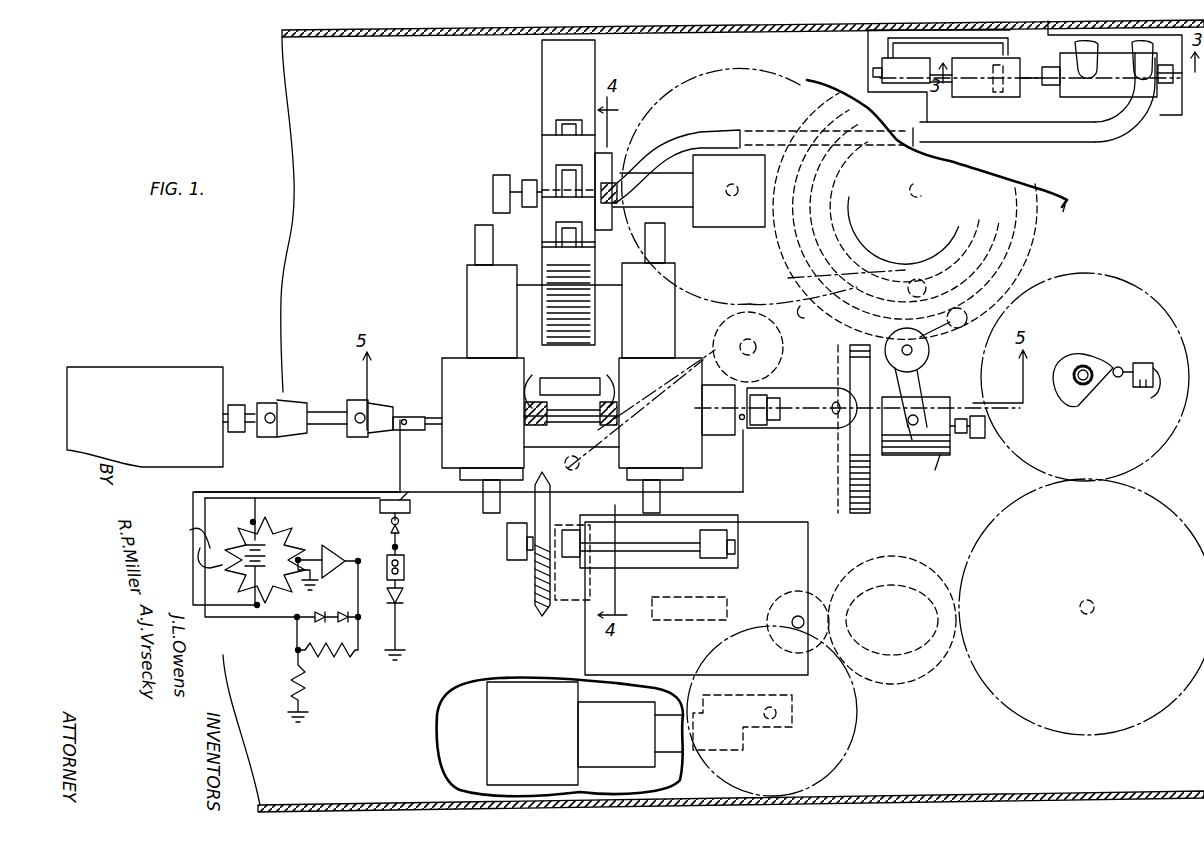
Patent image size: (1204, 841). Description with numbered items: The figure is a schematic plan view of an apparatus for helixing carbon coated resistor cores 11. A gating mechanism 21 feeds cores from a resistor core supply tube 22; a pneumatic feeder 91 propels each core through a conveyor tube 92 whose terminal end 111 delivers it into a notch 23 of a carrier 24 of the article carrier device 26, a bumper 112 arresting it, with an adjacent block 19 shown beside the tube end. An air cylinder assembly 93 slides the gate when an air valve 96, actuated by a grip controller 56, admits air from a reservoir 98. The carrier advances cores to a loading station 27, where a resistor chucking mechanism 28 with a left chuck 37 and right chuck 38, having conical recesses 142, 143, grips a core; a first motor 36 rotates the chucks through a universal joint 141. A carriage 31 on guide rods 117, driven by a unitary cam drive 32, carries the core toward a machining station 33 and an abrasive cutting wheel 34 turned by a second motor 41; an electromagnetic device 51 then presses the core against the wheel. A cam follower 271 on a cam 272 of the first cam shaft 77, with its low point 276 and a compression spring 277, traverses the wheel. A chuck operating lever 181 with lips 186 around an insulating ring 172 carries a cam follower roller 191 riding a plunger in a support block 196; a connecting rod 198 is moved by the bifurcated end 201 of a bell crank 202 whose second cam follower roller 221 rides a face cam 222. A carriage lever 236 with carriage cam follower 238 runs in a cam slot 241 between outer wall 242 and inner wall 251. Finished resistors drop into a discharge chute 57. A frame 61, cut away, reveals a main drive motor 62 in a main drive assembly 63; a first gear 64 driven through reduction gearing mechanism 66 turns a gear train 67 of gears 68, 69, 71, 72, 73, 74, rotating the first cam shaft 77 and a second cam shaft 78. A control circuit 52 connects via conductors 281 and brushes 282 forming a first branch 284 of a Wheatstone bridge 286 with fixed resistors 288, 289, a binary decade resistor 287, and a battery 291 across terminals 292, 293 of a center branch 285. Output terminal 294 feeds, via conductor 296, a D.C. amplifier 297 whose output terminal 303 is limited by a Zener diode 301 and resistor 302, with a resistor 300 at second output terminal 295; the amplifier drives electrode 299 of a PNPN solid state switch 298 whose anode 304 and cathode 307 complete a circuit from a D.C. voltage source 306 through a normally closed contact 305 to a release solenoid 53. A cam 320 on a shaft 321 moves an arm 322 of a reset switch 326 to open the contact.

The ceramic core 11 is at (568, 418).
The block 19 is at (680, 200).
The gating mechanism 21 is at (1069, 90).
The resistor core supply tube 22 is at (1075, 48).
The notches 23 is at (554, 138).
The carrier 24 is at (540, 97).
The article carrier device 26 is at (508, 166).
The loading station 27 is at (526, 333).
The resistor chucking mechanism 28 is at (645, 352).
The carriage 31 is at (468, 298).
The unitary cam drive 32 is at (831, 281).
The machining station 33 is at (509, 515).
The abrasive cutting wheel 34 is at (534, 600).
The first motor 36 is at (204, 366).
The left chuck 37 is at (537, 379).
The right chuck 38 is at (603, 379).
The second motor 41 is at (718, 558).
The electromagnetic device 51 is at (578, 530).
The control circuit 52 is at (177, 550).
The release solenoid 53 is at (406, 565).
The grip controller 56 is at (740, 455).
The discharge chute 57 is at (568, 378).
The frame 61 is at (280, 100).
The main drive motor 62 is at (495, 703).
The main drive assembly 63 is at (673, 693).
The first gear 64 is at (850, 755).
The reduction gearing mechanism 66 is at (640, 750).
The gear train 67 is at (969, 681).
The gear 68 is at (933, 675).
The gear 69 is at (1148, 500).
The gear 71 is at (1120, 285).
The gear 72 is at (1078, 212).
The gear 73 is at (860, 157).
The gear 74 is at (700, 80).
The first cam shaft 77 is at (890, 622).
The second cam shaft 78 is at (912, 198).
The pneumatic feeder 91 is at (1132, 58).
The conveyor tube 92 is at (690, 135).
The air cylinder assembly 93 is at (960, 85).
The air valve 96 is at (870, 69).
The reservoir 98 is at (870, 40).
The terminal end 111 is at (618, 180).
The bumper 112 is at (492, 195).
The guide rods 117 is at (476, 270).
The universal joint 141 is at (318, 388).
The first conical recess 142 is at (520, 412).
The second recess 143 is at (645, 405).
The insulating ring 172 is at (761, 387).
The chuck operating lever 181 is at (798, 388).
The lips 186 is at (720, 408).
The cam follower roller 191 is at (830, 425).
The support block 196 is at (956, 475).
The connecting rod 198 is at (918, 450).
The bifurcated end 201 is at (888, 460).
The bell crank 202 is at (920, 362).
The second cam follower roller 221 is at (958, 326).
The face cam 222 is at (1050, 190).
The carriage lever 236 is at (798, 306).
The carriage cam follower 238 is at (904, 235).
The cam slot 241 is at (1008, 235).
The outer wall 242 is at (1000, 172).
The inner wall 251 is at (985, 212).
The cam follower 271 is at (797, 590).
The cam 272 is at (878, 585).
The low point 276 is at (925, 605).
The compression spring 277 is at (672, 620).
The conductors 281 is at (400, 452).
The brushes 282 is at (405, 415).
The first branch 284 is at (185, 497).
The center branch 285 is at (255, 608).
The Wheatstone bridge 286 is at (213, 565).
The binary decade resistor 287 is at (228, 520).
The fixed resistor 288 is at (295, 620).
The fixed resistor 289 is at (290, 530).
The battery 291 is at (248, 574).
The terminal 292 is at (258, 516).
The terminal 293 is at (292, 652).
The output terminal 294 is at (298, 555).
The second output terminal 295 is at (180, 527).
The conductor 296 is at (310, 614).
The D.C. amplifier 297 is at (335, 548).
The PNPN solid state switch 298 is at (409, 608).
The electrode 299 is at (345, 654).
The resistor 300 is at (308, 698).
The Zener diode 301 is at (318, 590).
The resistor 302 is at (306, 682).
The output terminal 303 is at (364, 576).
The anode 304 is at (410, 595).
The normally closed contact 305 is at (404, 530).
The D.C. voltage source 306 is at (422, 483).
The cathode 307 is at (405, 622).
The cam 320 is at (1088, 400).
The shaft 321 is at (1085, 364).
The arm 322 is at (1120, 366).
The reset switch 326 is at (1148, 392).